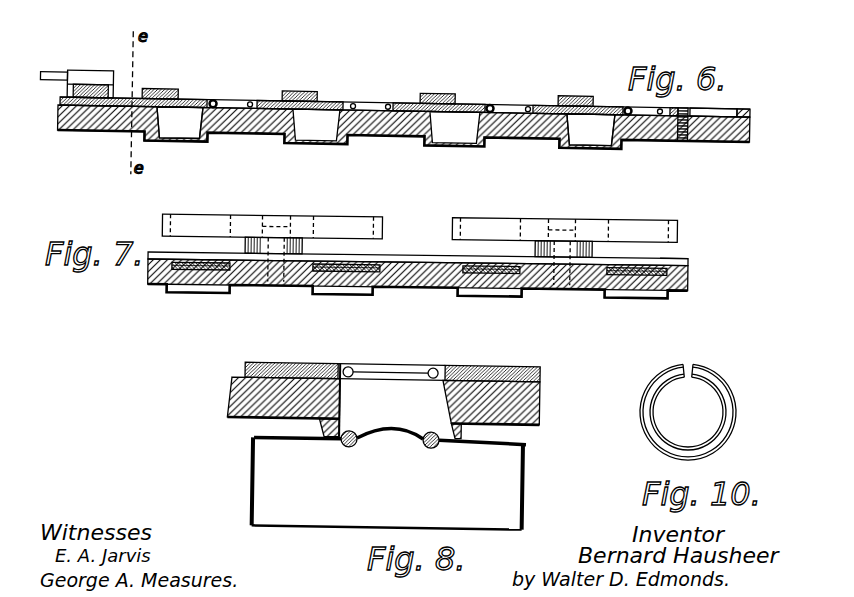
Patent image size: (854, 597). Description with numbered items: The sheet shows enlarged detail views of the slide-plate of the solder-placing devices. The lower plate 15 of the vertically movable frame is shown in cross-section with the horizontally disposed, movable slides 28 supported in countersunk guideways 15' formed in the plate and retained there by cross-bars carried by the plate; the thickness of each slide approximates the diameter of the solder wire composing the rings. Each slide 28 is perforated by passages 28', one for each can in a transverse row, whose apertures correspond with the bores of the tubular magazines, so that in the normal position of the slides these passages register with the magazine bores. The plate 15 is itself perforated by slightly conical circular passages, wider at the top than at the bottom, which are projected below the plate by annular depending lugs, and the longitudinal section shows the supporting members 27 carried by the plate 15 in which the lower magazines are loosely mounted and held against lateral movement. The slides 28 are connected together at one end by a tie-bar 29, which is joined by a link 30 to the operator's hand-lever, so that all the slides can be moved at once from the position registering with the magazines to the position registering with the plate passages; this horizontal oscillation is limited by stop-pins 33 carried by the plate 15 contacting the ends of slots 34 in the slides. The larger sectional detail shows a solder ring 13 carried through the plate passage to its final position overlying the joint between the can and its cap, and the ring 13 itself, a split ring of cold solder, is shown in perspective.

In FIG. 6, the solder ring 13 is at (224, 97).
In FIG. 8, the solder ring 13 is at (352, 366).
In FIG. 10, the solder ring 13 is at (731, 357).
In FIG. 6, the lower plate 15 is at (403, 143).
In FIG. 7, the lower plate 15 is at (417, 295).
In FIG. 8, the lower plate 15 is at (383, 401).
In FIG. 7, the countersunk guideways 15' is at (417, 316).
In FIG. 8, the countersunk guideways 15' is at (387, 483).
In FIG. 7, the supporting members 27 is at (285, 235).
In FIG. 6, the slides 28 is at (405, 88).
In FIG. 7, the slides 28 is at (417, 301).
In FIG. 8, the slides 28 is at (422, 375).
In FIG. 6, the passages 28' is at (446, 89).
In FIG. 7, the passages 28' is at (419, 307).
In FIG. 8, the passages 28' is at (397, 355).
In FIG. 6, the tie-bar 29 is at (108, 91).
In FIG. 6, the link 30 is at (66, 72).
In FIG. 6, the stop-pins 33 is at (683, 132).
In FIG. 6, the slots 34 is at (718, 100).